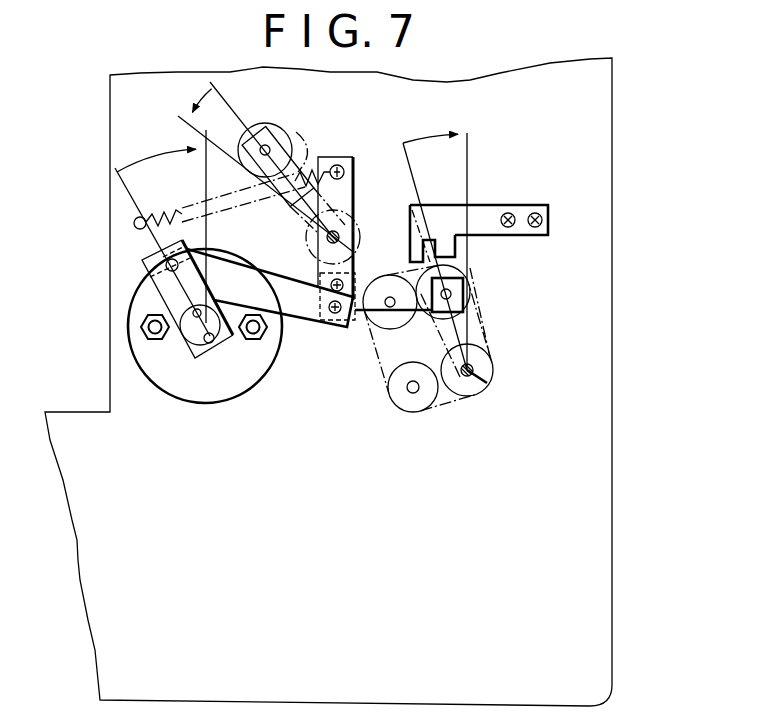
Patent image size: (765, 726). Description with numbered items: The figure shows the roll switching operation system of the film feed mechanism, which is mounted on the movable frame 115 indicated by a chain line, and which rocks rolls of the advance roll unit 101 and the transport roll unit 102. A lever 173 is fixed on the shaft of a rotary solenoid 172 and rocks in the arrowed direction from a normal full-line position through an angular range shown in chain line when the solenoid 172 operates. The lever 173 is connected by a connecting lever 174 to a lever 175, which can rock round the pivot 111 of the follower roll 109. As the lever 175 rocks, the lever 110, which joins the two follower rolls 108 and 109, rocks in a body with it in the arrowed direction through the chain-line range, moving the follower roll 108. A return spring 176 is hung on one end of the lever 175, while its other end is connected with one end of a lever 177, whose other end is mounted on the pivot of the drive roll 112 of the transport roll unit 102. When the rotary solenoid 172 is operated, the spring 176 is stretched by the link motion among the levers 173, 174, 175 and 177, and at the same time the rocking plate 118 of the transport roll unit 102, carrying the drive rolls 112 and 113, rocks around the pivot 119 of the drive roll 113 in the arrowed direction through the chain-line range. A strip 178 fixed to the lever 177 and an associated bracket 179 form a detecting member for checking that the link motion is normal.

The advance roll unit 101 is at (330, 146).
The transport roll unit 102 is at (530, 353).
The follower roll 108 is at (277, 124).
The follower roll 109 is at (352, 222).
The lever 110 is at (305, 152).
The pivot 111 is at (340, 237).
The drive roll 112 is at (465, 288).
The drive roll 113 is at (482, 357).
The movable frame 115 is at (612, 497).
The rocking plate 118 is at (372, 387).
The pivot 119 is at (487, 383).
The rotary solenoid 172 is at (233, 389).
The lever 173 is at (170, 328).
The connecting lever 174 is at (304, 309).
The lever 175 is at (366, 150).
The return spring 176 is at (164, 206).
The lever 177 is at (372, 278).
The strip 178 is at (423, 266).
The bracket 179 is at (498, 206).